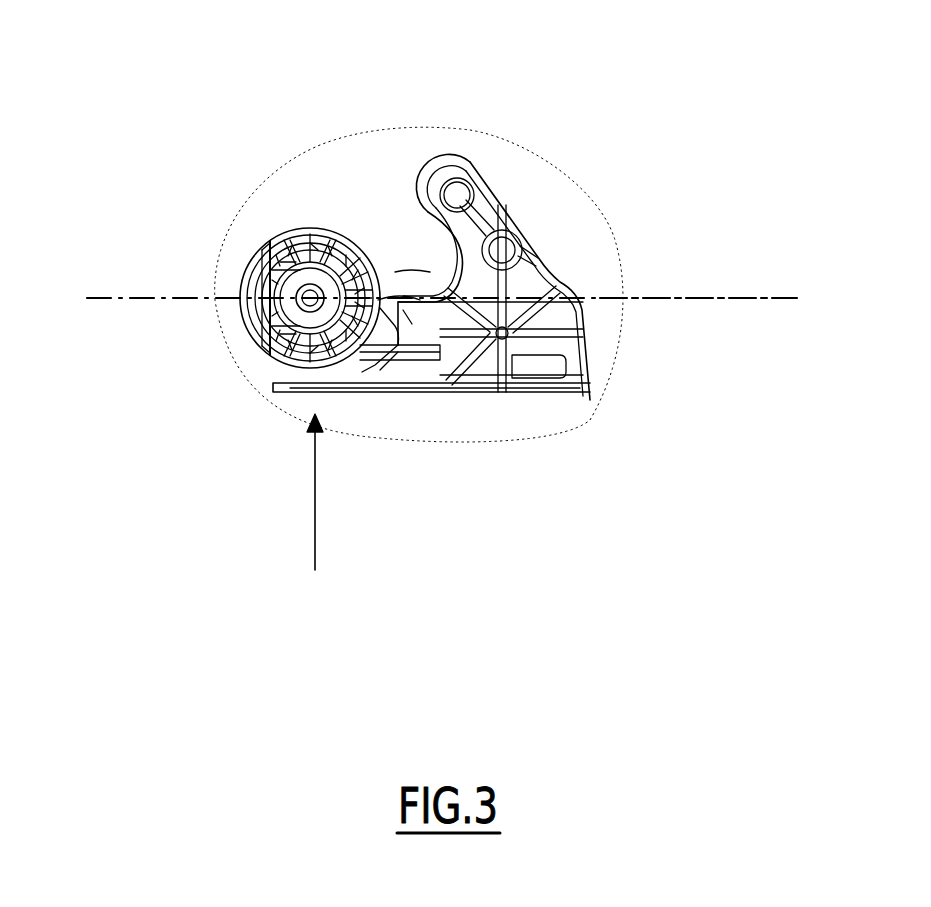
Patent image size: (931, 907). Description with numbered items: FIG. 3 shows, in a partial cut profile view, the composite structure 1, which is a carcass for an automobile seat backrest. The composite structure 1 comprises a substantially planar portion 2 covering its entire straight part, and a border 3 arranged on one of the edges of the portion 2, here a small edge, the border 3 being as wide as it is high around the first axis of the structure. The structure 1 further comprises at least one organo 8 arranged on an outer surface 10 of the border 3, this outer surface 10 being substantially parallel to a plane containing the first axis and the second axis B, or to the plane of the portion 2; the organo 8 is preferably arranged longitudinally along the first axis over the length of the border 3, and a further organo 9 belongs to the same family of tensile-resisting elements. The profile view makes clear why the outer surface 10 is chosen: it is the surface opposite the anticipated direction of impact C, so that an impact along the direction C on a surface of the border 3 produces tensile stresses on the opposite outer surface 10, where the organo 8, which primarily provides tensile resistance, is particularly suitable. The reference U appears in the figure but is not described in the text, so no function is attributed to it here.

The composite structure 1 is at (392, 120).
The portion 2 is at (573, 383).
The border 3 is at (273, 385).
The organo 8 is at (293, 227).
The organo 9 is at (393, 270).
The outer surface 10 is at (315, 233).
The rotation axis U is at (170, 240).
The second axis B is at (717, 298).
The direction of impact C is at (316, 458).